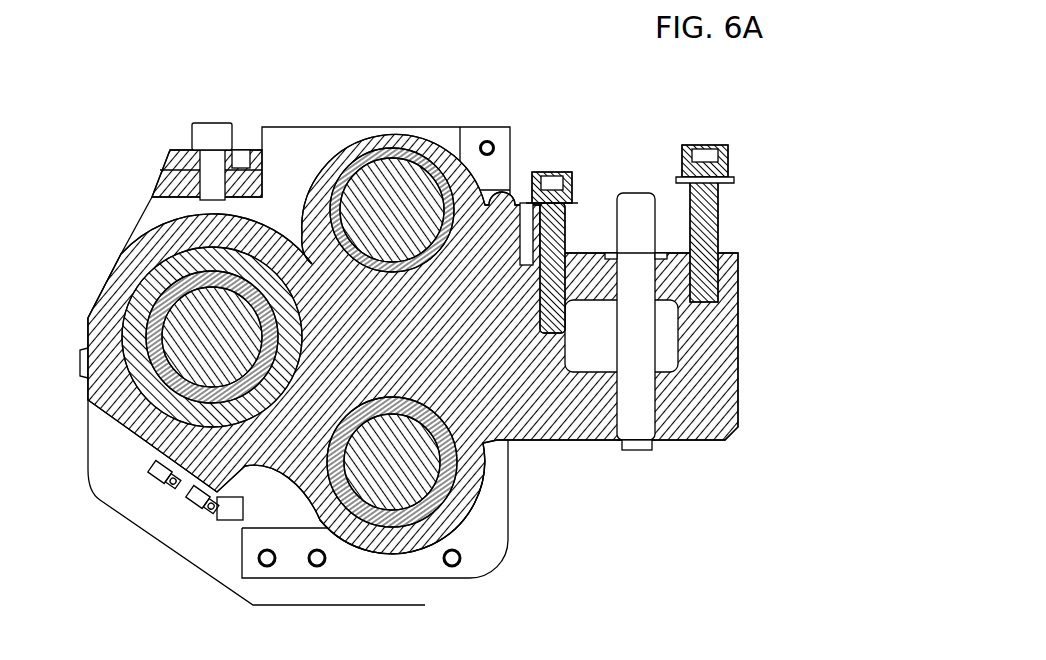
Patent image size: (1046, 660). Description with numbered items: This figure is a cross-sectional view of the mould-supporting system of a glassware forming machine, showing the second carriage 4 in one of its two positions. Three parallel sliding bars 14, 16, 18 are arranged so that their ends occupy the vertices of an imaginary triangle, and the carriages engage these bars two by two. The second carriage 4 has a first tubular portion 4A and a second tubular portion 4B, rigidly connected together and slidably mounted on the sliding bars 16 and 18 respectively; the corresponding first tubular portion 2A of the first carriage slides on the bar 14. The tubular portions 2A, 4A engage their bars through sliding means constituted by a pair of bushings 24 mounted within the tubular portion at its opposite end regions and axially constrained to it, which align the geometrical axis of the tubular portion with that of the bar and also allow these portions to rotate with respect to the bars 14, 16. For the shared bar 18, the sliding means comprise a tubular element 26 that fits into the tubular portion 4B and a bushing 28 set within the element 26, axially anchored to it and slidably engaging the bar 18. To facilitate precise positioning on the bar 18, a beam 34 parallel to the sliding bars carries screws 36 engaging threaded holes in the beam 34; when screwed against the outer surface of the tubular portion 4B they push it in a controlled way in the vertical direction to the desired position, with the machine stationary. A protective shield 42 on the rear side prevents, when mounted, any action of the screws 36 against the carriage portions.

The first tubular portion 2A is at (512, 150).
The second carriage 4 is at (742, 346).
The first tubular portion 4A is at (482, 485).
The second tubular portion 4B is at (88, 318).
The sliding bar 14 is at (356, 170).
The sliding bar 16 is at (382, 525).
The sliding bar 18 is at (163, 300).
The bushings 24 is at (432, 165).
The tubular element 26 is at (98, 404).
The bushing 28 is at (150, 278).
The beam 34 is at (240, 150).
The screws 36 is at (205, 132).
The protective shield 42 is at (190, 575).